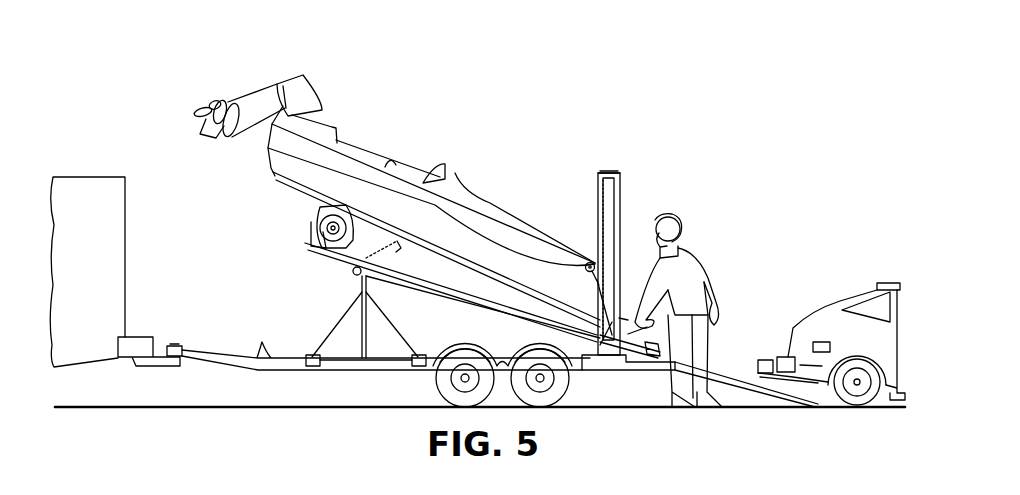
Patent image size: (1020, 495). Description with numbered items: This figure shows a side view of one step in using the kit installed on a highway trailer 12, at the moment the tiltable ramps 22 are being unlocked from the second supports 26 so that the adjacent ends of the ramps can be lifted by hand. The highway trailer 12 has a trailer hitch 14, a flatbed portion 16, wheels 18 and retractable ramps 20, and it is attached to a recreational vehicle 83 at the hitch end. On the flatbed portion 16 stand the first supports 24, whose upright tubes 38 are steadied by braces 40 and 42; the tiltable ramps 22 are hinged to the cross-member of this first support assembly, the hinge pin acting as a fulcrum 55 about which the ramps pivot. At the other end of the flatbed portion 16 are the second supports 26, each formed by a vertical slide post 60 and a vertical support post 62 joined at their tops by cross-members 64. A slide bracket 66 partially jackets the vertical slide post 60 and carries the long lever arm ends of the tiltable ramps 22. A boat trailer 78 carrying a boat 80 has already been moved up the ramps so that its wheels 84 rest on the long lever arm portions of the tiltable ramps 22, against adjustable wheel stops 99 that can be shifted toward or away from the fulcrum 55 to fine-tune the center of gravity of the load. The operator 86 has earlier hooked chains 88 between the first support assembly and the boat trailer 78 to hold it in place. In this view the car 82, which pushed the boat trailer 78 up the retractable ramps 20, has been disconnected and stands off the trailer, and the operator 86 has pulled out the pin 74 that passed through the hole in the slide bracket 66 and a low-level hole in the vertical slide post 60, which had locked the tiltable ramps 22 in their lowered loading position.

The highway trailer 12 is at (280, 392).
The trailer hitch 14 is at (174, 345).
The flatbed portion 16 is at (650, 373).
The wheels 18 is at (575, 377).
The retractable ramps 20 is at (755, 396).
The tiltable ramps 22 is at (482, 302).
The first supports 24 is at (338, 277).
The second supports 26 is at (676, 189).
The upright tubes 38 is at (363, 340).
The brace 40 is at (346, 318).
The brace 42 is at (405, 316).
The fulcrum 55 is at (361, 244).
The vertical slide post 60 is at (598, 200).
The vertical support post 62 is at (621, 197).
The cross-members 64 is at (607, 171).
The slide bracket 66 is at (583, 338).
The pin 74 is at (640, 318).
The boat trailer 78 is at (517, 292).
The boat 80 is at (522, 220).
The car 82 is at (873, 287).
The recreational vehicle 83 is at (124, 222).
The wheels 84 is at (315, 213).
The operator 86 is at (711, 272).
The chains 88 is at (387, 253).
The adjustable wheel stops 99 is at (311, 236).